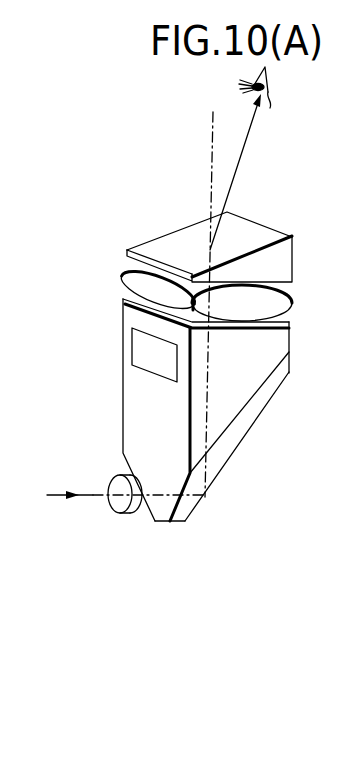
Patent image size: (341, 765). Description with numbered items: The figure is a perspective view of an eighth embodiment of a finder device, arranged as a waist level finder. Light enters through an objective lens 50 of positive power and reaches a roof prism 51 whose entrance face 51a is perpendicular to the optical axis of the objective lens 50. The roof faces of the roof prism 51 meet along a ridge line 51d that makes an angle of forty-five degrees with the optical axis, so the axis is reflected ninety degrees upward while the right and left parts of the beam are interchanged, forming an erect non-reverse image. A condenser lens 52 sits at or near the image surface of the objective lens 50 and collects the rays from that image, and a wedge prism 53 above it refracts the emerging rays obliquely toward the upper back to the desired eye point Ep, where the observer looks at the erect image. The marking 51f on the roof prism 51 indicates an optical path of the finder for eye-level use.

The objective lens 50 is at (118, 508).
The roof prism 51 is at (130, 397).
The entrance face 51a is at (158, 512).
The ridge line 51d is at (233, 457).
The optical path for eye level 51f is at (135, 343).
The condenser lens 52 is at (286, 302).
The wedge prism 53 is at (286, 265).
The eye point Ep is at (248, 158).